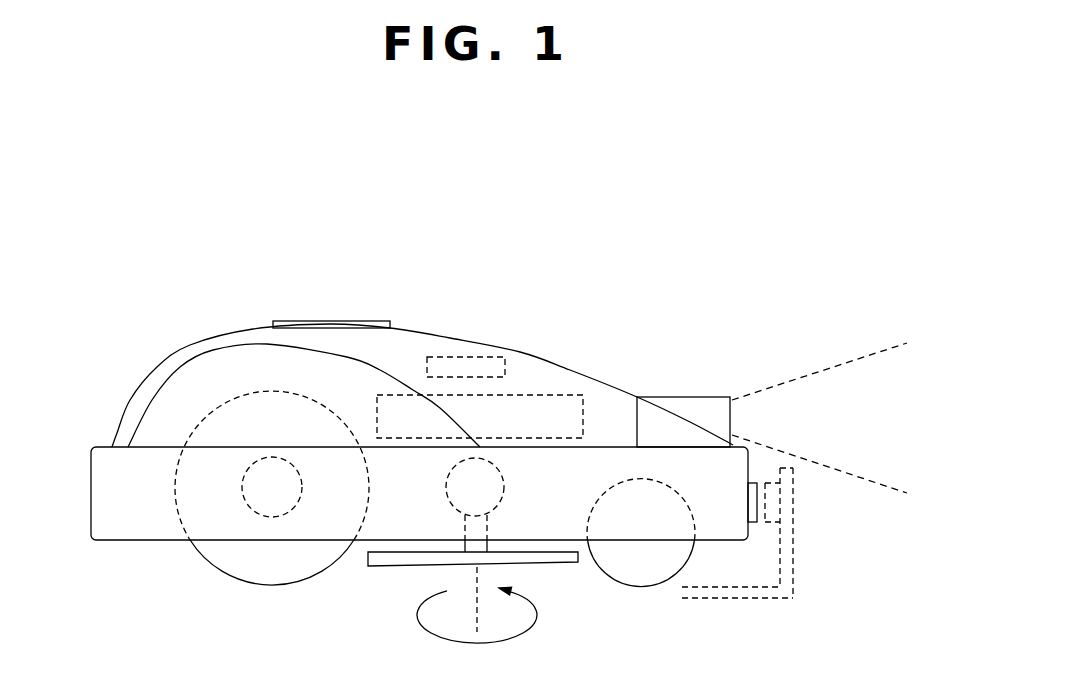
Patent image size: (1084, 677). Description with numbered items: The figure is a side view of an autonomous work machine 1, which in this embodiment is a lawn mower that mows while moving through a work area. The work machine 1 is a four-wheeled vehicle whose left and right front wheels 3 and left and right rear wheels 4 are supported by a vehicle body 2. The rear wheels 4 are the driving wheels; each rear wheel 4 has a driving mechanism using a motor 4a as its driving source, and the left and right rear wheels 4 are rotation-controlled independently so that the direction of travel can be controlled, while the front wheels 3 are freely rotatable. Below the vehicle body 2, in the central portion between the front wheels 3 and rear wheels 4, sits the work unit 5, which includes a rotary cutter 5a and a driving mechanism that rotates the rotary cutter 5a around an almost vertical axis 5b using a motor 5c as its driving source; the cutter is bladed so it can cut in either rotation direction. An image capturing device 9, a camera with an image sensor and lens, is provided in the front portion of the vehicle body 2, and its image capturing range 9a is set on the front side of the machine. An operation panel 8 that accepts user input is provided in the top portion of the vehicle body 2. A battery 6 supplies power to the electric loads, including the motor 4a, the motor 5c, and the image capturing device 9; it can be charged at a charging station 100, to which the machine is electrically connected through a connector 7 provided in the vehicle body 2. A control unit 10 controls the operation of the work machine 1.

The autonomous work machine 1 is at (244, 232).
The vehicle body 2 is at (477, 343).
The front wheels 3 is at (636, 587).
The rear wheels 4 is at (285, 587).
The motor 4a is at (270, 457).
The work unit 5 is at (370, 598).
The rotary cutter 5a is at (413, 567).
The axis 5b is at (477, 612).
The motor 5c is at (504, 484).
The battery 6 is at (568, 395).
The connector 7 is at (752, 522).
The operation panel 8 is at (338, 321).
The image capturing device 9 is at (676, 397).
The image capturing range 9a is at (821, 371).
The control unit 10 is at (437, 357).
The charging station 100 is at (795, 568).